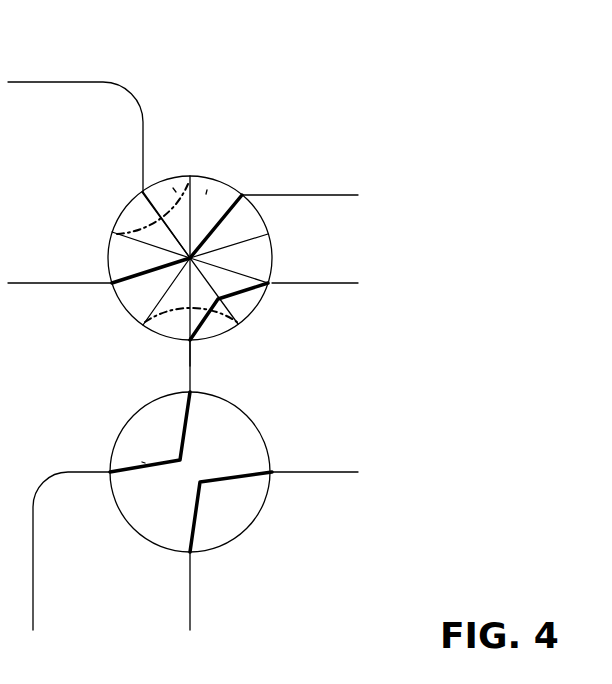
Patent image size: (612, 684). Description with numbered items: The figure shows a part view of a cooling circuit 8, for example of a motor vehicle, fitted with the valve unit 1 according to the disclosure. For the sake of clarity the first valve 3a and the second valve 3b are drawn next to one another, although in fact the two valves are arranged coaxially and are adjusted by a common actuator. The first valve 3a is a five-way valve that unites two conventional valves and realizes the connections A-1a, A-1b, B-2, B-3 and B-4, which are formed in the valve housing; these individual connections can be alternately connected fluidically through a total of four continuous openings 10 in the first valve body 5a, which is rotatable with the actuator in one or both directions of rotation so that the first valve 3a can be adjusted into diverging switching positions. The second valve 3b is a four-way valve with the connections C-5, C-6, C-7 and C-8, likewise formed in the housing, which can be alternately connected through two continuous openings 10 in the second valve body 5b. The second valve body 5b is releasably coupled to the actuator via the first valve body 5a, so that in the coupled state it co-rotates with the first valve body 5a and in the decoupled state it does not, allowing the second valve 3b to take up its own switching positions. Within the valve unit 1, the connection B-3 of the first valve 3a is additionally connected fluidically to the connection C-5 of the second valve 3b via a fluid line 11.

The valve unit 1 is at (332, 132).
The cooling circuit 8 is at (428, 152).
The first valve 3a is at (305, 223).
The second valve 3b is at (283, 510).
The first valve body 5a is at (125, 258).
The second valve body 5b is at (165, 515).
The continuous openings 10 is at (173, 188).
The fluid line 11 is at (187, 362).
The connection A-1a is at (143, 193).
The connection A-1b is at (113, 282).
The connection B-2 is at (268, 283).
The connection B-3 is at (195, 345).
The connection B-4 is at (240, 193).
The connection C-5 is at (190, 391).
The connection C-6 is at (190, 553).
The connection C-7 is at (110, 472).
The connection C-8 is at (272, 472).